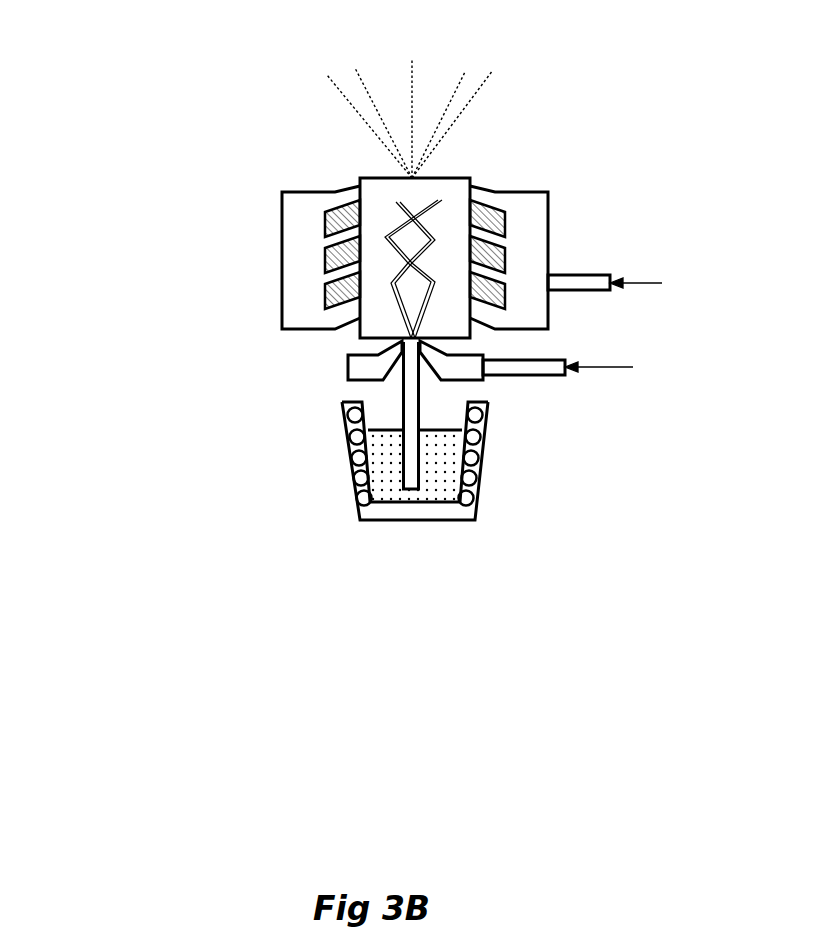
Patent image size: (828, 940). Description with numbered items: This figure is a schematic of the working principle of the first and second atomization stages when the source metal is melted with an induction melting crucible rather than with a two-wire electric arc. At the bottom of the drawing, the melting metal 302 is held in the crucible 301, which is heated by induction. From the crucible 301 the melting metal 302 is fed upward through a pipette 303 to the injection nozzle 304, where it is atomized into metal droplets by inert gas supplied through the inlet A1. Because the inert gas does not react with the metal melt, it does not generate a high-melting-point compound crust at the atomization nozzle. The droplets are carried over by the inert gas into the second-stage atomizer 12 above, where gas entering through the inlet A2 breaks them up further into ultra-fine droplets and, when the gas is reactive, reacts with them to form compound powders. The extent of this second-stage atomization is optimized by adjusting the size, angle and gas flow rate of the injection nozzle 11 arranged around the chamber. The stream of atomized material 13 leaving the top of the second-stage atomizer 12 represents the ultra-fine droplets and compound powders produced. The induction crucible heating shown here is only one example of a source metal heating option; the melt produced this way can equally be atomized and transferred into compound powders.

The atomized metal spray 13 is at (403, 213).
The second-stage atomizer 12 is at (373, 227).
The injection nozzle 11 is at (330, 272).
The injection nozzle 304 is at (402, 343).
The pipette 303 is at (412, 372).
The melting metal 302 is at (383, 448).
The crucible 301 is at (352, 493).
The inlet A1 is at (580, 362).
The inlet A2 is at (626, 282).